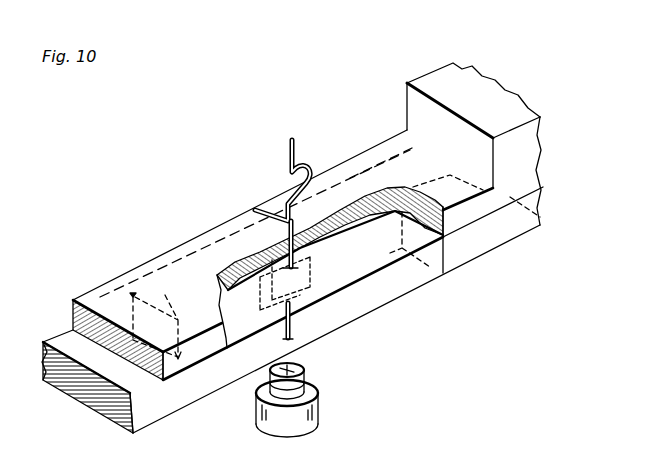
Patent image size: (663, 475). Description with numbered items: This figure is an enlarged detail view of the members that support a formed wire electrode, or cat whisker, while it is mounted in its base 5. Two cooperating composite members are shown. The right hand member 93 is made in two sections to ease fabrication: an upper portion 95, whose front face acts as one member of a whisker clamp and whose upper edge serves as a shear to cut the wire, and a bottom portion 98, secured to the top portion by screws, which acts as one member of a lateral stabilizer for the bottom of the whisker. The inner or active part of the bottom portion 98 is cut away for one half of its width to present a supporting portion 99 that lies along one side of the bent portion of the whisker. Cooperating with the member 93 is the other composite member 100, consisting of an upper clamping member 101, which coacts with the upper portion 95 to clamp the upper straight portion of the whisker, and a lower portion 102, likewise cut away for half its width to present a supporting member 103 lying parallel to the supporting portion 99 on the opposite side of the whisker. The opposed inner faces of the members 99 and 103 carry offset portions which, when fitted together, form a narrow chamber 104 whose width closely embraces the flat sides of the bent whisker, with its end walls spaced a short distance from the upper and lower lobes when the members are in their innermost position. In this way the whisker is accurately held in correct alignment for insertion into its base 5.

The base 5 is at (320, 403).
The right hand member 93 is at (537, 166).
The upper portion 95 is at (377, 153).
The bottom portion 98 is at (510, 226).
The supporting portion 99 is at (338, 213).
The composite member 100 is at (90, 392).
The upper clamping member 101 is at (109, 292).
The lower portion 102 is at (165, 411).
The supporting member 103 is at (373, 257).
The chamber 104 is at (313, 262).